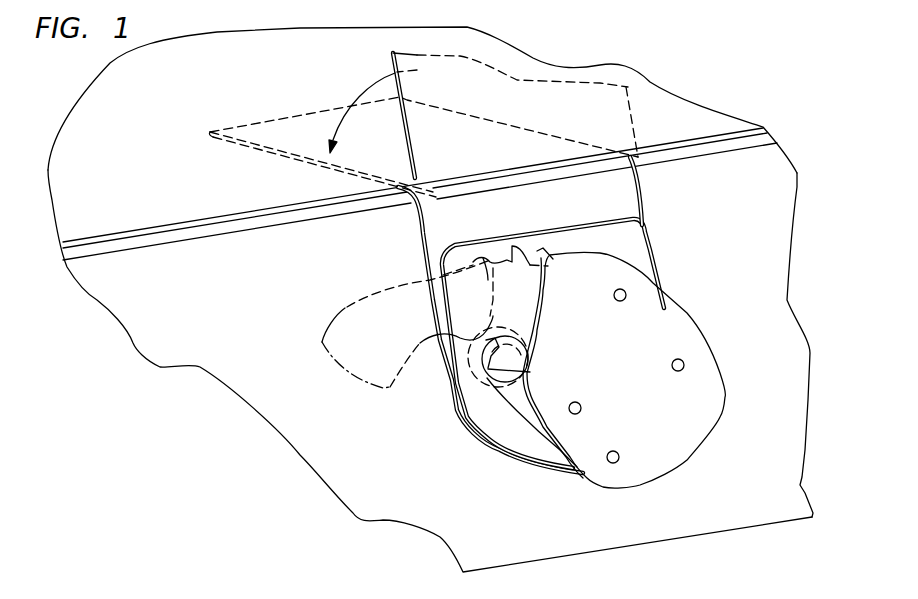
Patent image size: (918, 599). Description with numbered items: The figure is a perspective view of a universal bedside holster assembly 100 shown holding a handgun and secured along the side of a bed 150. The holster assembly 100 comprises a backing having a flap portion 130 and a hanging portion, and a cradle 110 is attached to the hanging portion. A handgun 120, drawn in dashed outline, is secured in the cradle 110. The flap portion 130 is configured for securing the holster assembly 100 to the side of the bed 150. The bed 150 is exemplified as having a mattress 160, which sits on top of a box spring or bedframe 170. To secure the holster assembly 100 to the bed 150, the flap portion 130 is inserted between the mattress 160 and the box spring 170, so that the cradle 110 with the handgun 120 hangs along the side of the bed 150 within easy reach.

The holster assembly 100 is at (693, 268).
The cradle 110 is at (705, 437).
The handgun 120 is at (345, 308).
The flap portion 130 is at (338, 163).
The bed 150 is at (813, 153).
The mattress 160 is at (707, 108).
The box spring 170 is at (776, 308).